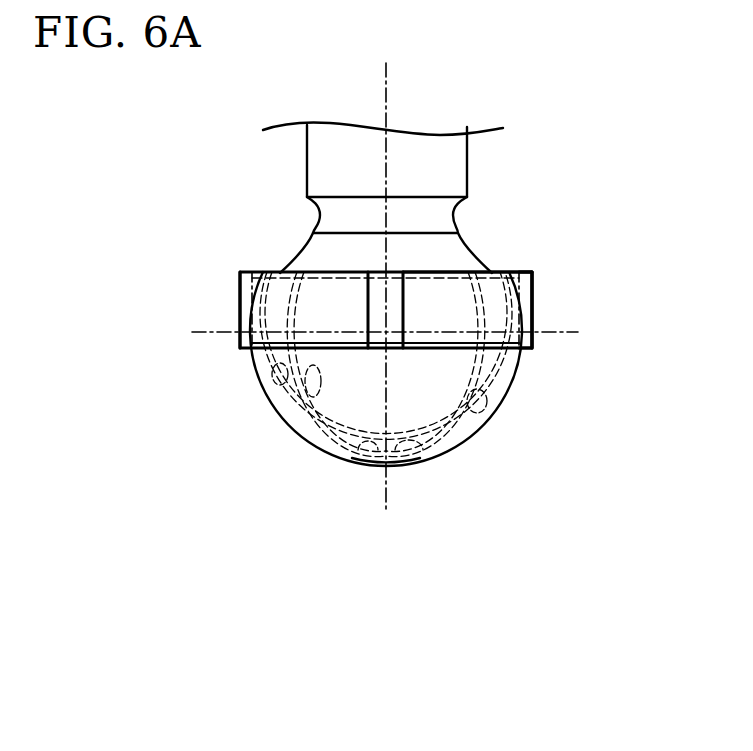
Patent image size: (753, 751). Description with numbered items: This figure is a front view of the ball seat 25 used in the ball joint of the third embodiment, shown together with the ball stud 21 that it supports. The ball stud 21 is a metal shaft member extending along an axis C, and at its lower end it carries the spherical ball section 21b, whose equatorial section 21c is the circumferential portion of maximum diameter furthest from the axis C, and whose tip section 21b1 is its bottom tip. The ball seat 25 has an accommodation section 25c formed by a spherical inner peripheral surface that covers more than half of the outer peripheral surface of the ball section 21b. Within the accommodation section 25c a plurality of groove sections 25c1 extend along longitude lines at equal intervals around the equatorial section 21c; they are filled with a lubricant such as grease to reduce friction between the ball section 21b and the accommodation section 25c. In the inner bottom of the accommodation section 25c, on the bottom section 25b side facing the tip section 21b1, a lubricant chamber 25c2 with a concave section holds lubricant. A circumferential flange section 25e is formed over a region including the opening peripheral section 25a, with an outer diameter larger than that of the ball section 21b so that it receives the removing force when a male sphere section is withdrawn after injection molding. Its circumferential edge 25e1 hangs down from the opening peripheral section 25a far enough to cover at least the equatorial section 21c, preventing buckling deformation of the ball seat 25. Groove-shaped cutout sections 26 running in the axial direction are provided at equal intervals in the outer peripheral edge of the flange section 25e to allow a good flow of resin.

The axis C is at (387, 87).
The ball stud 21 is at (468, 172).
The ball section 21b is at (294, 253).
The tip section 21b1 is at (440, 452).
The equatorial section 21c is at (563, 331).
The ball seat 25 is at (541, 290).
The opening peripheral section 25a is at (516, 271).
The bottom section 25b is at (390, 466).
The accommodation section 25c is at (498, 404).
The groove sections 25c1 is at (316, 398).
The lubricant chamber 25c2 is at (356, 462).
The flange section 25e is at (245, 312).
The circumferential edge 25e1 is at (520, 348).
The cutout sections 26 is at (385, 288).